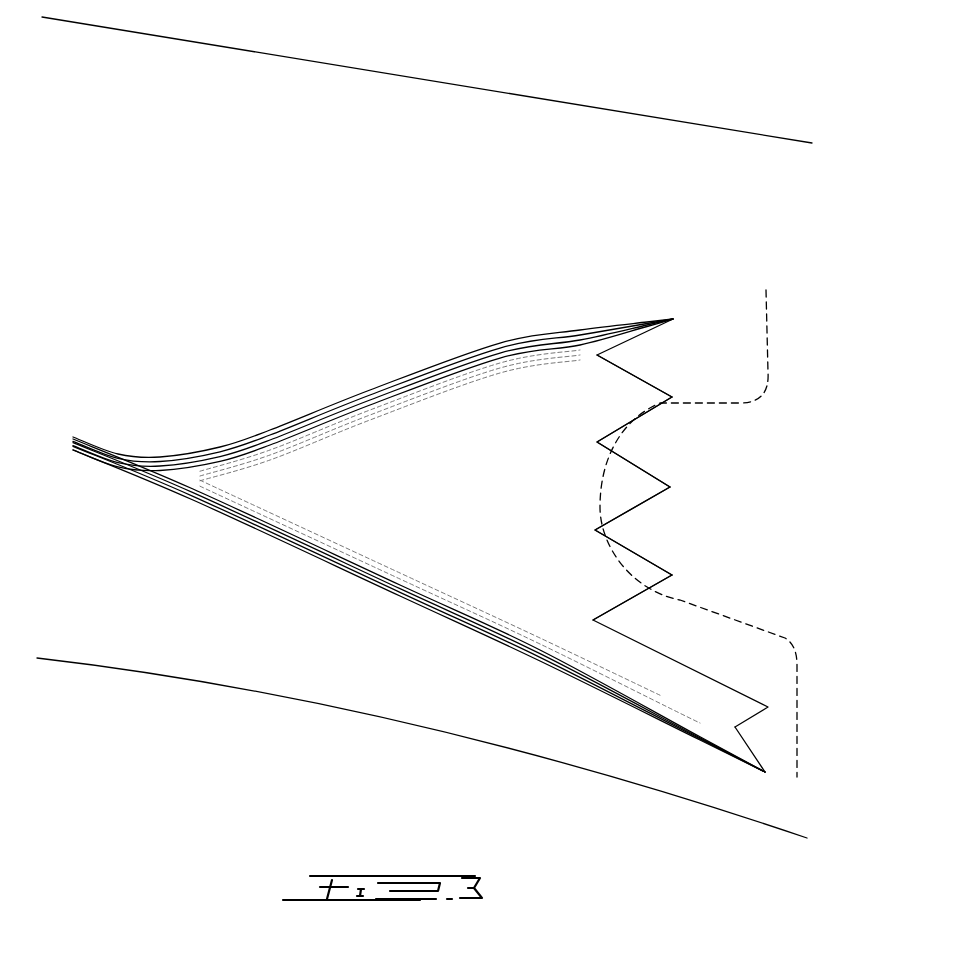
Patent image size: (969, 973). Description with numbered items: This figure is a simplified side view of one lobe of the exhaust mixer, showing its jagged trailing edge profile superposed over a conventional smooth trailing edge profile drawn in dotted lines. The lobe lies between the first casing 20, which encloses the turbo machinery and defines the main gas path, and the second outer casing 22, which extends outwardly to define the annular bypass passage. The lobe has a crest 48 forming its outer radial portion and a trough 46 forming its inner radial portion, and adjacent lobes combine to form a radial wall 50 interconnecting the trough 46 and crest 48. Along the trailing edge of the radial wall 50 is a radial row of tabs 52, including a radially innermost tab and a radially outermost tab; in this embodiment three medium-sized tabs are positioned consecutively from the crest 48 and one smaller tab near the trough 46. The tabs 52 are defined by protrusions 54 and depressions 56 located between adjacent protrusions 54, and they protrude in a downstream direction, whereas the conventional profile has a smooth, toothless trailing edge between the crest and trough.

The first casing 20 is at (613, 767).
The second outer casing 22 is at (603, 103).
The trough 46 is at (732, 753).
The crest 48 is at (555, 337).
The radial wall 50 is at (513, 482).
The tab 52 is at (652, 392).
The protrusion 54 is at (633, 593).
The depression 56 is at (593, 442).